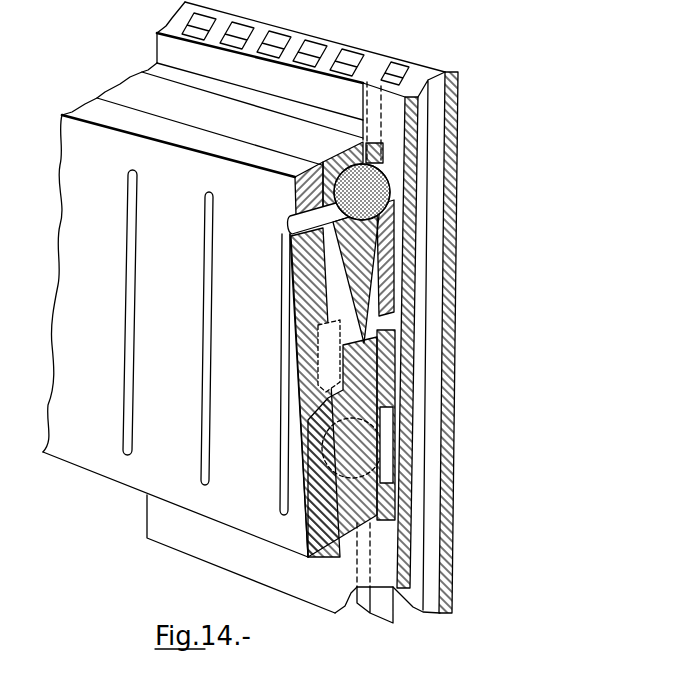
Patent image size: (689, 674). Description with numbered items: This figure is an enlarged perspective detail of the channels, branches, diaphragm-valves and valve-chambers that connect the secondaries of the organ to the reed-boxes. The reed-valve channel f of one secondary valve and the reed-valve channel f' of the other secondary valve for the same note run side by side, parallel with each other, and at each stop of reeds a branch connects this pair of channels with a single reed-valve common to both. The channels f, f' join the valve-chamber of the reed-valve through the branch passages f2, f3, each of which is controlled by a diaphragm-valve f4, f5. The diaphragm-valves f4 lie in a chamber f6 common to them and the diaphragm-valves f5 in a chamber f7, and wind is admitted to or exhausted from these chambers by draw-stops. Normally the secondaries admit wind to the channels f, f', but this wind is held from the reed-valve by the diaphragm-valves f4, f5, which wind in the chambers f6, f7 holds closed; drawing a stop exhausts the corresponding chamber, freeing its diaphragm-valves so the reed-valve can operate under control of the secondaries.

The reed-valve channel f is at (312, 330).
The reed-valve channel f' is at (409, 339).
The branch passage f2 is at (332, 370).
The branch passage f3 is at (348, 293).
The diaphragm-valve f4 is at (383, 447).
The diaphragm-valve f5 is at (393, 187).
The chamber f6 is at (383, 473).
The chamber f7 is at (388, 167).